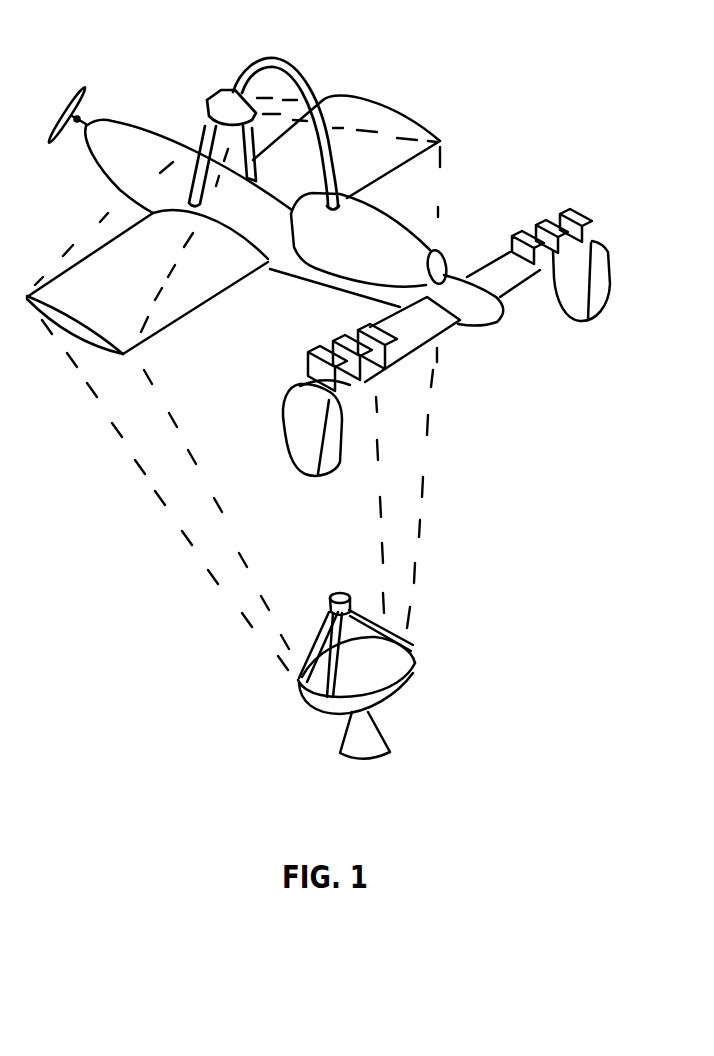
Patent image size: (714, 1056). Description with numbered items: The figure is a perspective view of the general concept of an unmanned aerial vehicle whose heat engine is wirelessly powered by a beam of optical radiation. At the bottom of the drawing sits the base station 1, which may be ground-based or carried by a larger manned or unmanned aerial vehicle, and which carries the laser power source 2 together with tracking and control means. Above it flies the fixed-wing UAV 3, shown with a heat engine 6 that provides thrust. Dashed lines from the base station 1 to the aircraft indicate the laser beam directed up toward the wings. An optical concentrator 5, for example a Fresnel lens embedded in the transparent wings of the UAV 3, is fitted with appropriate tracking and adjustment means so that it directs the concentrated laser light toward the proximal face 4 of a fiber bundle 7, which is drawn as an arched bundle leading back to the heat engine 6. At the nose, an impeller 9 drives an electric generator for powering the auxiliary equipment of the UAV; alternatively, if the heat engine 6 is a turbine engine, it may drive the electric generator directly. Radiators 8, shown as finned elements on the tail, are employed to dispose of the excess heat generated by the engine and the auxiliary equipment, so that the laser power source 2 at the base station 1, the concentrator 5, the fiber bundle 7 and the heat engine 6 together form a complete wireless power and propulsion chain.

The base station 1 is at (395, 745).
The laser power source 2 is at (330, 602).
The fixed-wing UAV 3 is at (131, 149).
The proximal face 4 is at (221, 88).
The optical concentrator 5 is at (380, 160).
The heat engine 6 is at (413, 243).
The fiber bundle 7 is at (295, 68).
The radiators 8 is at (540, 263).
The impeller 9 is at (73, 97).